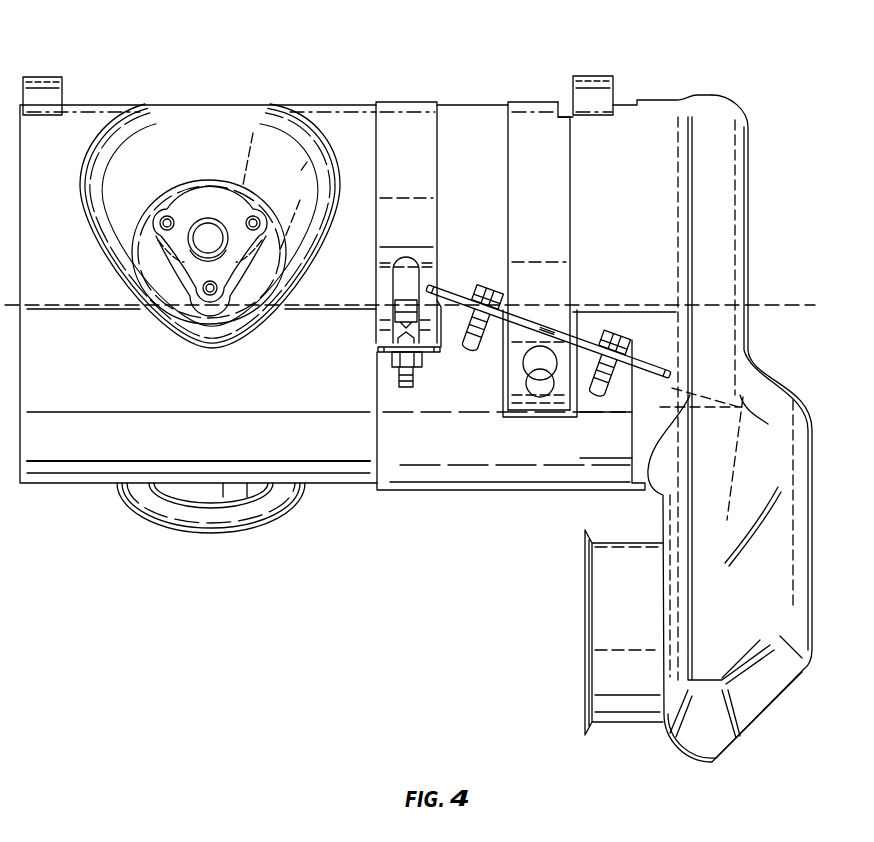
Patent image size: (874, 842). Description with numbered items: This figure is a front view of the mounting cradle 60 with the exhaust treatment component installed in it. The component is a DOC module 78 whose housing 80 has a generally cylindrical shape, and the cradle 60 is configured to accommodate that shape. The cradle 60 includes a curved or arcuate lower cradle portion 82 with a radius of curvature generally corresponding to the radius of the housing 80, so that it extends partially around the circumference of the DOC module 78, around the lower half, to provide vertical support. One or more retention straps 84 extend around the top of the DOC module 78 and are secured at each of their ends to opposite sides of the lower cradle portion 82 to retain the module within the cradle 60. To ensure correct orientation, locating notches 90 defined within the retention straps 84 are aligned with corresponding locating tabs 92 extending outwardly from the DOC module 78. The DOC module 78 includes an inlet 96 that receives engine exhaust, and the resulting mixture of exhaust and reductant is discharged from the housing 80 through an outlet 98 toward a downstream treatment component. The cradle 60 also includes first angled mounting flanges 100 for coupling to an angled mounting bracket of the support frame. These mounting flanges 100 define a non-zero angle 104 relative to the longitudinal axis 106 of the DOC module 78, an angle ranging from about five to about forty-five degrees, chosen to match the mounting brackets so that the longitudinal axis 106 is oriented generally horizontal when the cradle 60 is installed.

The mounting cradle 60 is at (390, 68).
The DOC module 78 is at (103, 510).
The housing 80 is at (62, 367).
The lower cradle portion 82 is at (483, 472).
The retention straps 84 is at (520, 228).
The locating notches 90 is at (560, 110).
The locating tabs 92 is at (43, 80).
The inlet 96 is at (585, 703).
The outlet 98 is at (195, 533).
The first angled mounting flanges 100 is at (604, 346).
The angle 104 is at (703, 353).
The longitudinal axis 106 is at (797, 295).